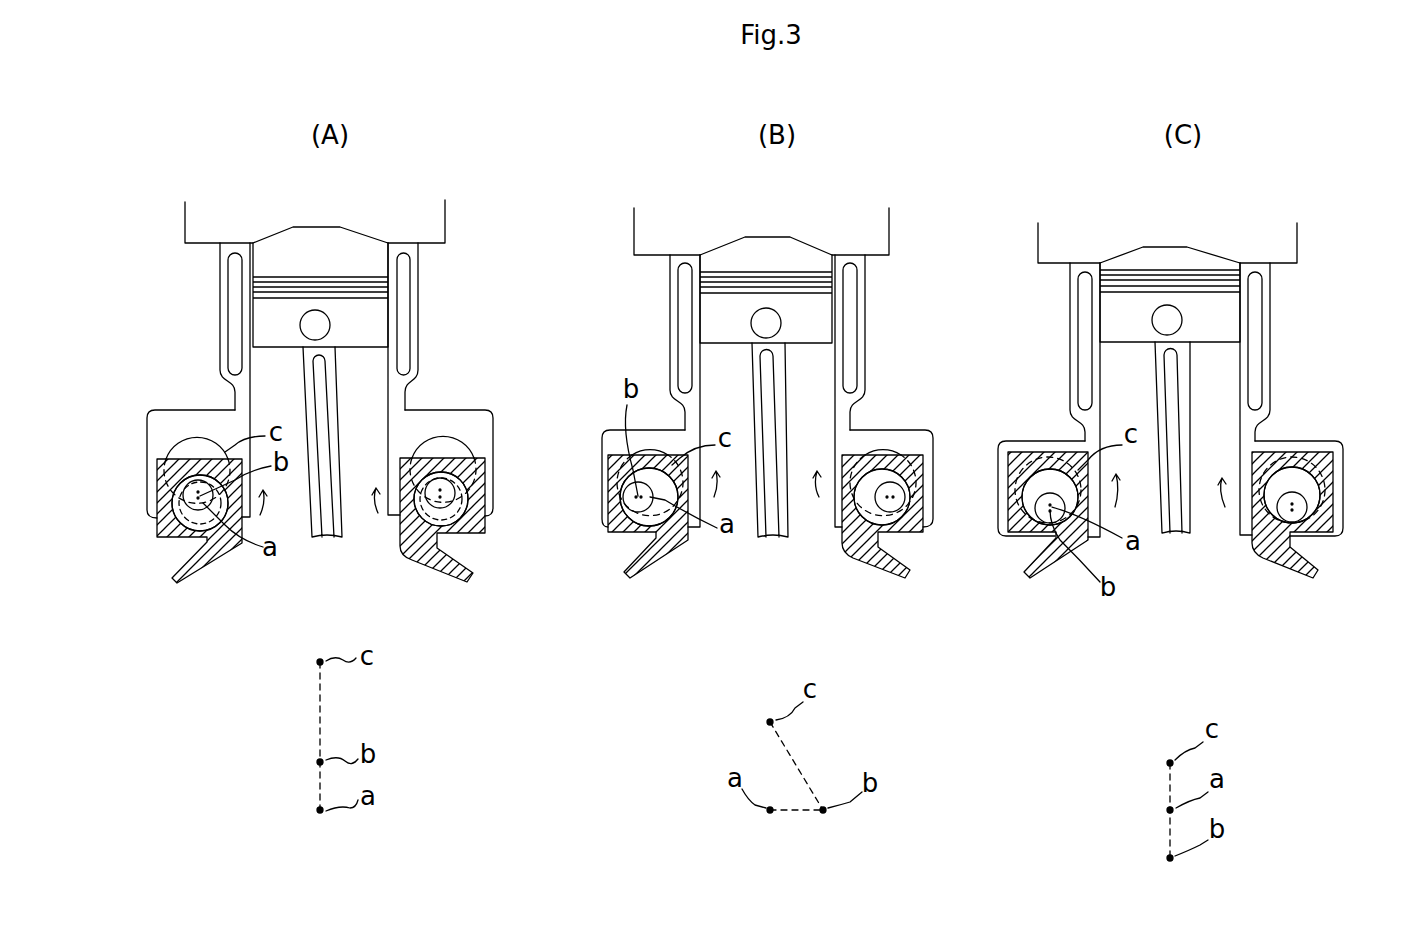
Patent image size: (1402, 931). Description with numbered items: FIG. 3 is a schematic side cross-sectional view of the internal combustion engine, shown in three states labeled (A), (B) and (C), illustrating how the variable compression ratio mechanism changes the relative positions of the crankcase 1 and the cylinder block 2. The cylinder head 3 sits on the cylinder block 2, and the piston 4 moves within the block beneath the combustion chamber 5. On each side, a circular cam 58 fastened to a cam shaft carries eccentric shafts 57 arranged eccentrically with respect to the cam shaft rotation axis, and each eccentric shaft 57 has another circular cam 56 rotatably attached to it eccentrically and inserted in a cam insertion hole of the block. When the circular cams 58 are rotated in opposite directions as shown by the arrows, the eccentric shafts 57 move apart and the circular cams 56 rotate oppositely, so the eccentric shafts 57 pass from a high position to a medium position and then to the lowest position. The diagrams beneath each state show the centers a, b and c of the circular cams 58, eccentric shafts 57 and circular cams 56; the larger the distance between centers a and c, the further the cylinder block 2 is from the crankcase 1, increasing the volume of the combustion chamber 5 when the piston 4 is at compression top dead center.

The crankcase 1 is at (227, 551).
The cylinder block 2 is at (414, 280).
The cylinder head 3 is at (437, 215).
The piston 4 is at (375, 325).
The combustion chamber 5 is at (291, 253).
The circular cam 56 is at (172, 447).
The eccentric shaft 57 is at (173, 503).
The circular cam 58 is at (178, 537).